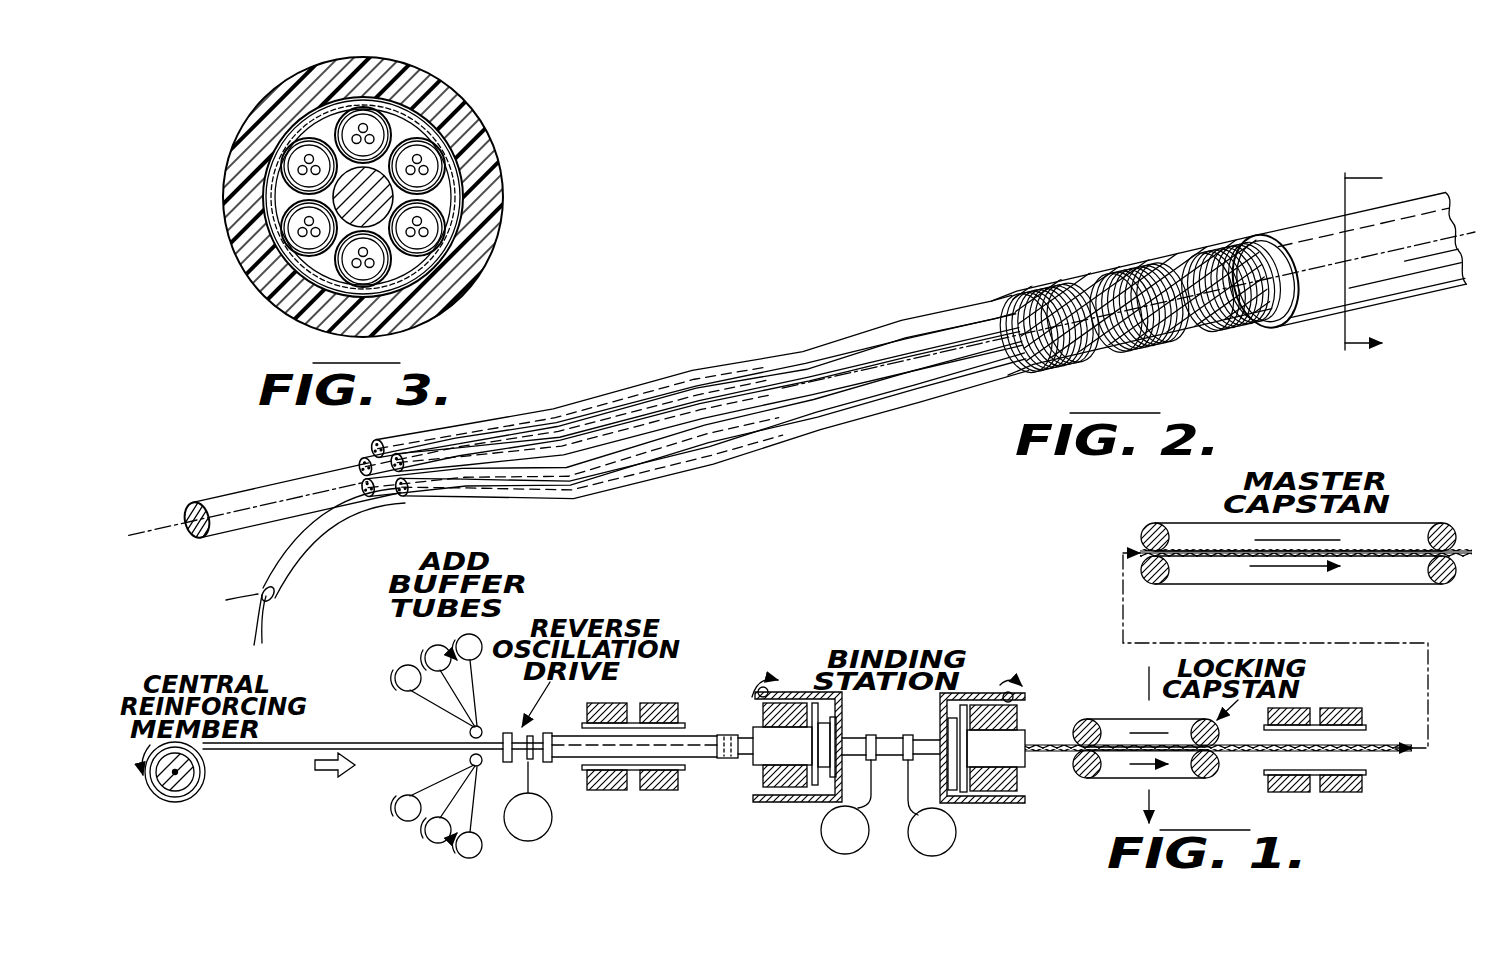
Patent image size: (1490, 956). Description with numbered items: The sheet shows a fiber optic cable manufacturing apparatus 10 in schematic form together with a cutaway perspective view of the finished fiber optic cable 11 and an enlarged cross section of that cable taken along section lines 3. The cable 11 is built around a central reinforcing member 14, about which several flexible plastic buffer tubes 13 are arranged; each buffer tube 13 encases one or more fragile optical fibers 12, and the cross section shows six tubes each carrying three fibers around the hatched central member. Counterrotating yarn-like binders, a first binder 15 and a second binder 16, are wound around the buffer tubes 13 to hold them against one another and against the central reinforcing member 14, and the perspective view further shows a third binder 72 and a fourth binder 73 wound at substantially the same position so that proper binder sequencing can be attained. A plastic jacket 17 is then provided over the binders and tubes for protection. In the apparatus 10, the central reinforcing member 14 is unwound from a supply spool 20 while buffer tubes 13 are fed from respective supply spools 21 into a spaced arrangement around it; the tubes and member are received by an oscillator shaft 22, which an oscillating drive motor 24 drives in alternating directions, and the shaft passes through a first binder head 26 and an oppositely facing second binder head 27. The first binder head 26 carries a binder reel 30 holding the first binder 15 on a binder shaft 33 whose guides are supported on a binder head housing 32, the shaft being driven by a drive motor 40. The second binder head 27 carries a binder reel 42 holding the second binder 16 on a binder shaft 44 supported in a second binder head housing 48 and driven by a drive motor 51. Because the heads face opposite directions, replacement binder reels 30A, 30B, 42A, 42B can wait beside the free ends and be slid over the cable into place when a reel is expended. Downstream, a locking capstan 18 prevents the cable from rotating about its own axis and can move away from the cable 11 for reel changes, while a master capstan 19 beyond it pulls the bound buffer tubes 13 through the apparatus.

In FIG. 2, the section lines 3— 3 is at (1349, 270).
In FIG. 1, the cable manufacturing apparatus 10 is at (807, 686).
In FIG. 3, the fiber optic cable 11 is at (399, 197).
In FIG. 2, the fiber optic cable 11 is at (802, 357).
In FIG. 3, the optical fibers 12 is at (372, 128).
In FIG. 2, the optical fibers 12 is at (240, 600).
In FIG. 3, the buffer tubes 13 is at (373, 137).
In FIG. 2, the buffer tubes 13 is at (790, 367).
In FIG. 1, the buffer tubes 13 is at (463, 722).
In FIG. 3, the central reinforcing member 14 is at (380, 188).
In FIG. 2, the central reinforcing member 14 is at (252, 497).
In FIG. 1, the central reinforcing member 14 is at (287, 750).
In FIG. 3, the first binder 15 is at (257, 227).
In FIG. 2, the first binder 15 is at (1118, 277).
In FIG. 1, the first binder 15 is at (748, 728).
In FIG. 2, the second binder 16 is at (1160, 290).
In FIG. 1, the second binder 16 is at (1035, 735).
In FIG. 3, the jacket 17 is at (465, 277).
In FIG. 2, the jacket 17 is at (1303, 230).
In FIG. 1, the locking capstan 18 is at (1185, 780).
In FIG. 1, the master capstan 19 is at (1178, 523).
In FIG. 1, the supply spool 20 is at (187, 797).
In FIG. 1, the supply spools 21 is at (430, 652).
In FIG. 1, the oscillator shaft 22 is at (748, 762).
In FIG. 1, the oscillating drive motor 24 is at (550, 828).
In FIG. 1, the first binder head 26 is at (775, 735).
In FIG. 1, the second binder head 27 is at (1016, 735).
In FIG. 1, the binder reel 30 is at (778, 790).
In FIG. 1, the replacement binder reel 30A is at (610, 790).
In FIG. 1, the replacement binder reel 30B is at (662, 790).
In FIG. 1, the binder head housing 32 is at (800, 803).
In FIG. 1, the binder shaft 33 is at (853, 745).
In FIG. 1, the drive motor 40 is at (845, 855).
In FIG. 1, the binder reel 42 is at (1000, 800).
In FIG. 1, the replacement binder reel 42A is at (1300, 708).
In FIG. 1, the replacement binder reel 42B is at (1335, 792).
In FIG. 1, the binder shaft 44 is at (924, 746).
In FIG. 1, the second binder head housing 48 is at (1018, 805).
In FIG. 1, the drive motor 51 is at (931, 856).
In FIG. 2, the third binder 72 is at (1090, 357).
In FIG. 2, the fourth binder 73 is at (1042, 360).